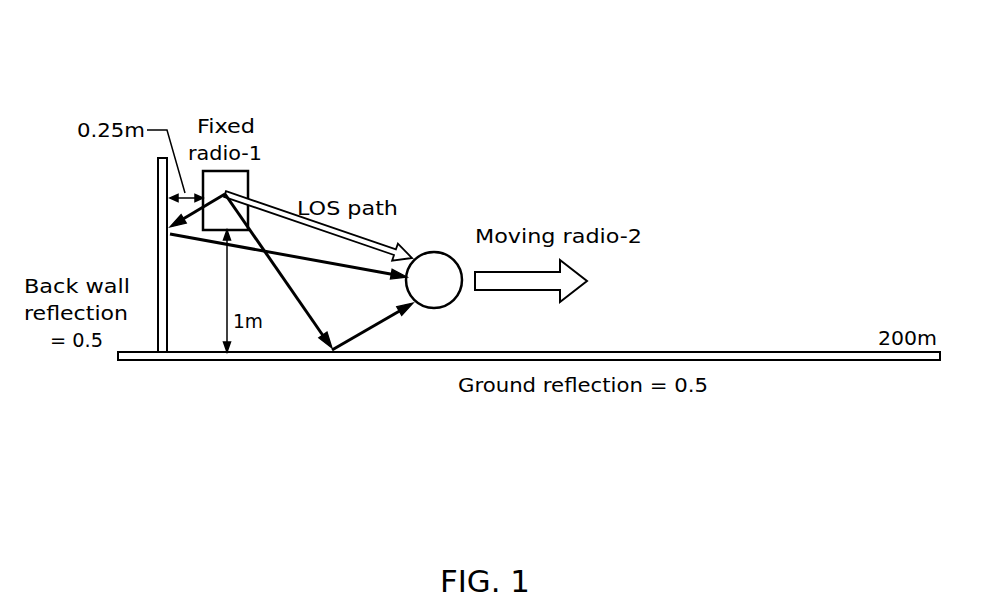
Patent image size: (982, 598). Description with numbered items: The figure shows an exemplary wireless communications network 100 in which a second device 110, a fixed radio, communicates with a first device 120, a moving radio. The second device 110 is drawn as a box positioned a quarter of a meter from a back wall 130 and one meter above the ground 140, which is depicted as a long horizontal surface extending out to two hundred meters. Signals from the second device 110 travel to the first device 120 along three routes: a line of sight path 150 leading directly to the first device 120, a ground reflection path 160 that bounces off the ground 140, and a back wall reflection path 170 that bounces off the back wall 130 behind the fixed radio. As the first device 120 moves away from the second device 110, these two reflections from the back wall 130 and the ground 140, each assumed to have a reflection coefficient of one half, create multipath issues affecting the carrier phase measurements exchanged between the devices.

The communications network 100 is at (777, 55).
The second device 110 is at (248, 182).
The first device 120 is at (435, 308).
The back wall 130 is at (158, 233).
The ground 140 is at (775, 360).
The line of sight (LOS) path 150 is at (383, 242).
The ground reflection path 160 is at (377, 328).
The back wall reflection path 170 is at (349, 268).